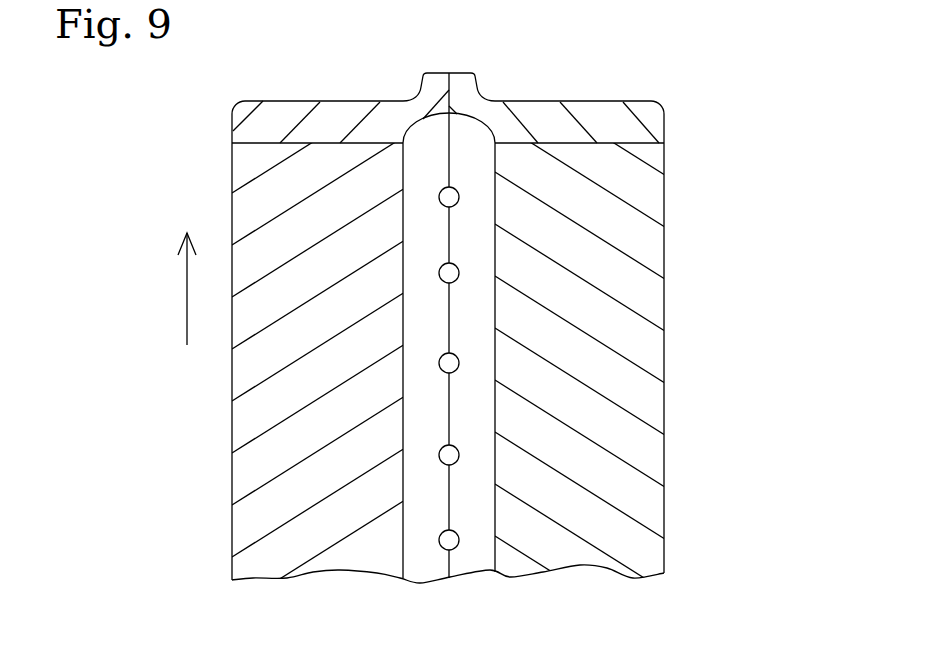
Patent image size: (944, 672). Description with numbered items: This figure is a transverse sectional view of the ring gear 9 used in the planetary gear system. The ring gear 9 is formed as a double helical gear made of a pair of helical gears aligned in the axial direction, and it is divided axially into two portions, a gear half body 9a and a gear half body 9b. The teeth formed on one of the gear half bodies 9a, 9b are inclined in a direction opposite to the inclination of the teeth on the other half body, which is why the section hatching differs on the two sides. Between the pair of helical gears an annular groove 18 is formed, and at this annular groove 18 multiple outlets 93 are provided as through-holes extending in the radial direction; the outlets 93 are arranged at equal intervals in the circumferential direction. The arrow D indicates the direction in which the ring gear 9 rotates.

The ring gear 9 is at (665, 192).
The gear half body 9a is at (336, 101).
The gear half body 9b is at (548, 102).
The annular groove 18 is at (468, 306).
The outlets 93 is at (450, 549).
The arrow D is at (188, 297).